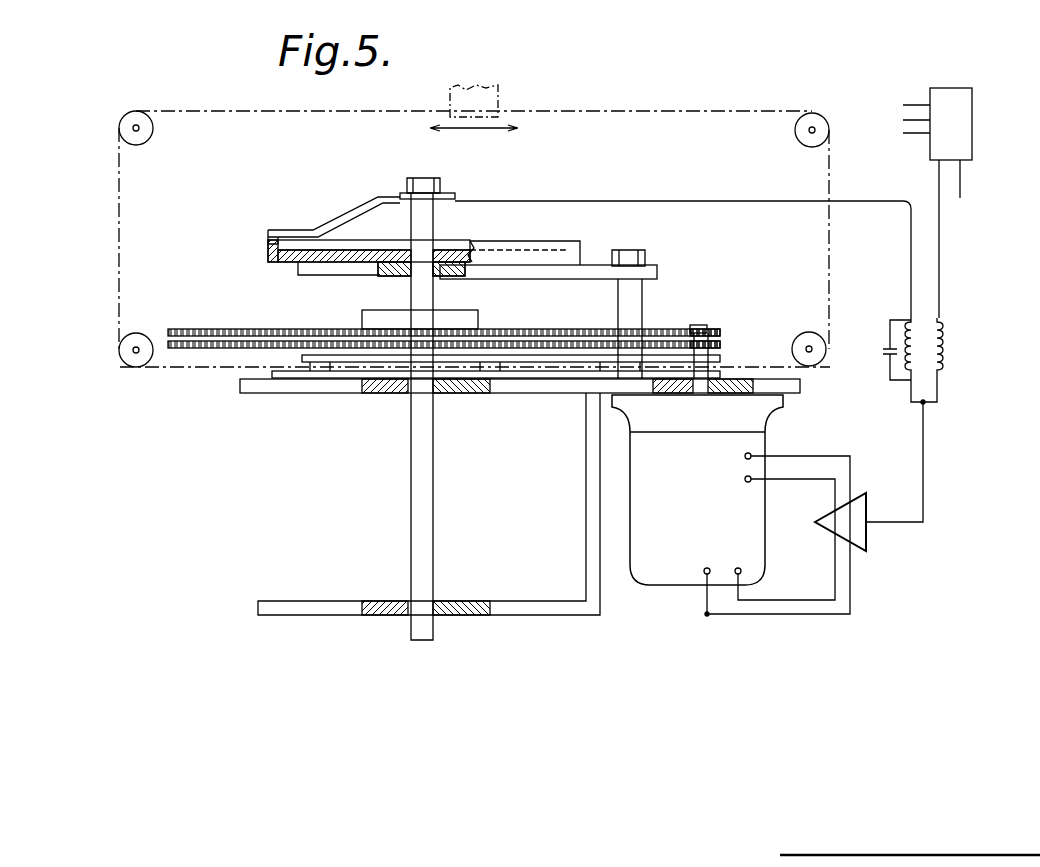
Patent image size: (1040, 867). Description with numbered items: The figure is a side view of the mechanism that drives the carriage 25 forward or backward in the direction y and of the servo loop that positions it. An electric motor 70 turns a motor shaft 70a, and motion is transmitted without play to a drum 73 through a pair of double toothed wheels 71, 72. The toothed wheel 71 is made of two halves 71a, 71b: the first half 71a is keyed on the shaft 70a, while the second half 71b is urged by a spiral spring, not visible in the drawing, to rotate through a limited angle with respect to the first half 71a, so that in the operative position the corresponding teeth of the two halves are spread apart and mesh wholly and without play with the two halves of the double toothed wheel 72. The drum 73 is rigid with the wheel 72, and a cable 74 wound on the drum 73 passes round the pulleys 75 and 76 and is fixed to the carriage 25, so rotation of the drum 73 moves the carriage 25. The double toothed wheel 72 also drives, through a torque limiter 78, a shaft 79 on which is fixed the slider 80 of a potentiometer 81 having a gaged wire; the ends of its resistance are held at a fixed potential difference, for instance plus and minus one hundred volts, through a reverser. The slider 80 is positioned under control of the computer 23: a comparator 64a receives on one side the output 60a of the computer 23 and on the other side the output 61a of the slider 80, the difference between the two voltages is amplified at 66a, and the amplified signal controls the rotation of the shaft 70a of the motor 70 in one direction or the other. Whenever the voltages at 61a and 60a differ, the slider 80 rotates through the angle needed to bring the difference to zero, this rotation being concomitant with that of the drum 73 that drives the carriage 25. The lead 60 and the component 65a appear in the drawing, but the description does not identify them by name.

The computer 23 is at (962, 120).
The carriage 25 is at (487, 105).
The lead 60 is at (960, 178).
The output of computer 60a is at (939, 230).
The output of slider 61a is at (848, 201).
The comparator 64a is at (937, 352).
The capacitor 65a is at (885, 358).
The amplifier 66a is at (855, 533).
The electric motor 70 is at (690, 560).
The motor shaft 70a is at (708, 375).
The toothed wheel 71 is at (700, 325).
The first half of toothed wheel 71a is at (722, 328).
The second half of toothed wheel 71b is at (721, 345).
The double toothed wheel 72 is at (648, 338).
The drum 73 is at (548, 359).
The cable 74 is at (208, 368).
The pulley 75 is at (126, 357).
The pulley 76 is at (148, 132).
The torque limiter 78 is at (478, 323).
The shaft 79 is at (410, 293).
The slider 80 is at (352, 220).
The potentiometer 81 is at (548, 254).